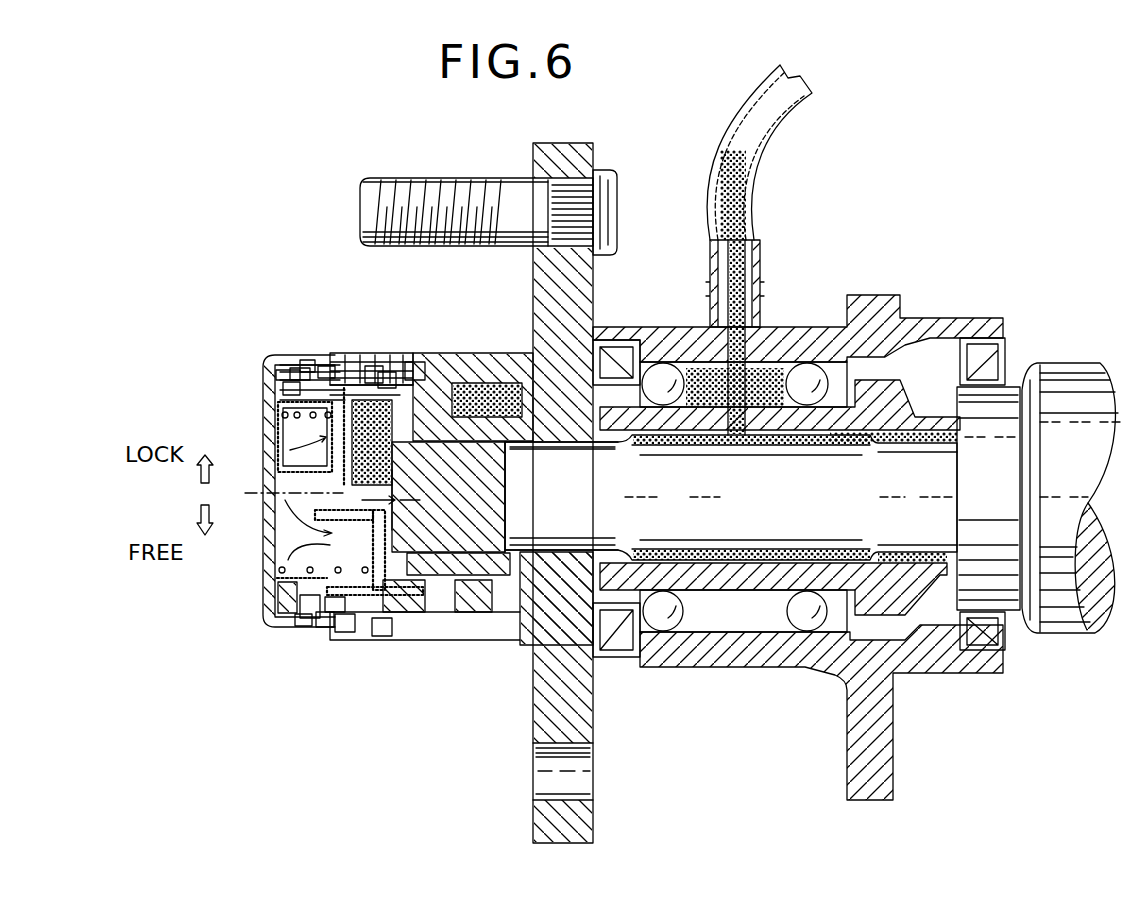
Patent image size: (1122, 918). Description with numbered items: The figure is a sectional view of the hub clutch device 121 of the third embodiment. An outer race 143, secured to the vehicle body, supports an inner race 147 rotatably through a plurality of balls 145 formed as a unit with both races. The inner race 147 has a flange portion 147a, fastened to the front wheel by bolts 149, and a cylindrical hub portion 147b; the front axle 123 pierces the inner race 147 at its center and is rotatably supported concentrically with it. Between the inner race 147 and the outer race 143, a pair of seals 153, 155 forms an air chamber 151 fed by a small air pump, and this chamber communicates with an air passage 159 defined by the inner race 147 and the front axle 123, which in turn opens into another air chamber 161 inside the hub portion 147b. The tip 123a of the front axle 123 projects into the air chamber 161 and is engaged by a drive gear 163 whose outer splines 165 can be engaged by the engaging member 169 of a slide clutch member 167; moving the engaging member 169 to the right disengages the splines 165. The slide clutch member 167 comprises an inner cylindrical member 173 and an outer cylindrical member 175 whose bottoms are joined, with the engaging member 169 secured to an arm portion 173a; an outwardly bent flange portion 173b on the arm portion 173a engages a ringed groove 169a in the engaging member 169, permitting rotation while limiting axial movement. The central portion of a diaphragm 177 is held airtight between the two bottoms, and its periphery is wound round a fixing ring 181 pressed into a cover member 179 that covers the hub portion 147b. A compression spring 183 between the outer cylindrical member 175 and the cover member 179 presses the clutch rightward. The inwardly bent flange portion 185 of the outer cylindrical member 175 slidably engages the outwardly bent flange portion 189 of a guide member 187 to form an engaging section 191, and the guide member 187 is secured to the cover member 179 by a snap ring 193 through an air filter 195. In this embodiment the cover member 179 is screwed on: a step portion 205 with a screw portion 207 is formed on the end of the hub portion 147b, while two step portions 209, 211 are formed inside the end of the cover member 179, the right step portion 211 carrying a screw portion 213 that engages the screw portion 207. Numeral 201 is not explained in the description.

The hub clutch device 121 is at (260, 622).
The front axle 123 is at (790, 509).
The tip of the front axle 123a is at (506, 504).
The outer race 143 is at (820, 330).
The balls 145 is at (670, 362).
The inner race 147 is at (522, 368).
The flange portion 147a is at (580, 150).
The hub portion 147b is at (470, 368).
The bolts 149 is at (416, 192).
The air chamber 151 is at (760, 330).
The seal 153 is at (608, 342).
The seal 155 is at (870, 370).
The air passage 159 is at (660, 445).
The air chamber 161 is at (352, 365).
The drive gear 163 is at (487, 466).
The splines 165 is at (396, 508).
The slide clutch member 167 is at (300, 452).
The engaging member 169 is at (495, 612).
The ringed groove 169a is at (373, 366).
The inner cylindrical member 173 is at (470, 612).
The arm portion 173a is at (386, 372).
The flange portion 173b is at (420, 364).
The outer cylindrical member 175 is at (278, 374).
The diaphragm 177 is at (308, 360).
The cover member 179 is at (284, 392).
The fixing ring 181 is at (332, 612).
The compression spring 183 is at (285, 415).
The flange portion 185 is at (311, 618).
The guide member 187 is at (302, 626).
The flange portion 189 is at (288, 556).
The engaging section 191 is at (322, 627).
The snap ring 193 is at (296, 368).
The air filter 195 is at (278, 372).
The hub 201 is at (448, 497).
The step portion 205 is at (398, 612).
The screw portion 207 is at (358, 365).
The step portion 209 is at (340, 632).
The step portion 211 is at (384, 636).
The screw portion 213 is at (323, 366).